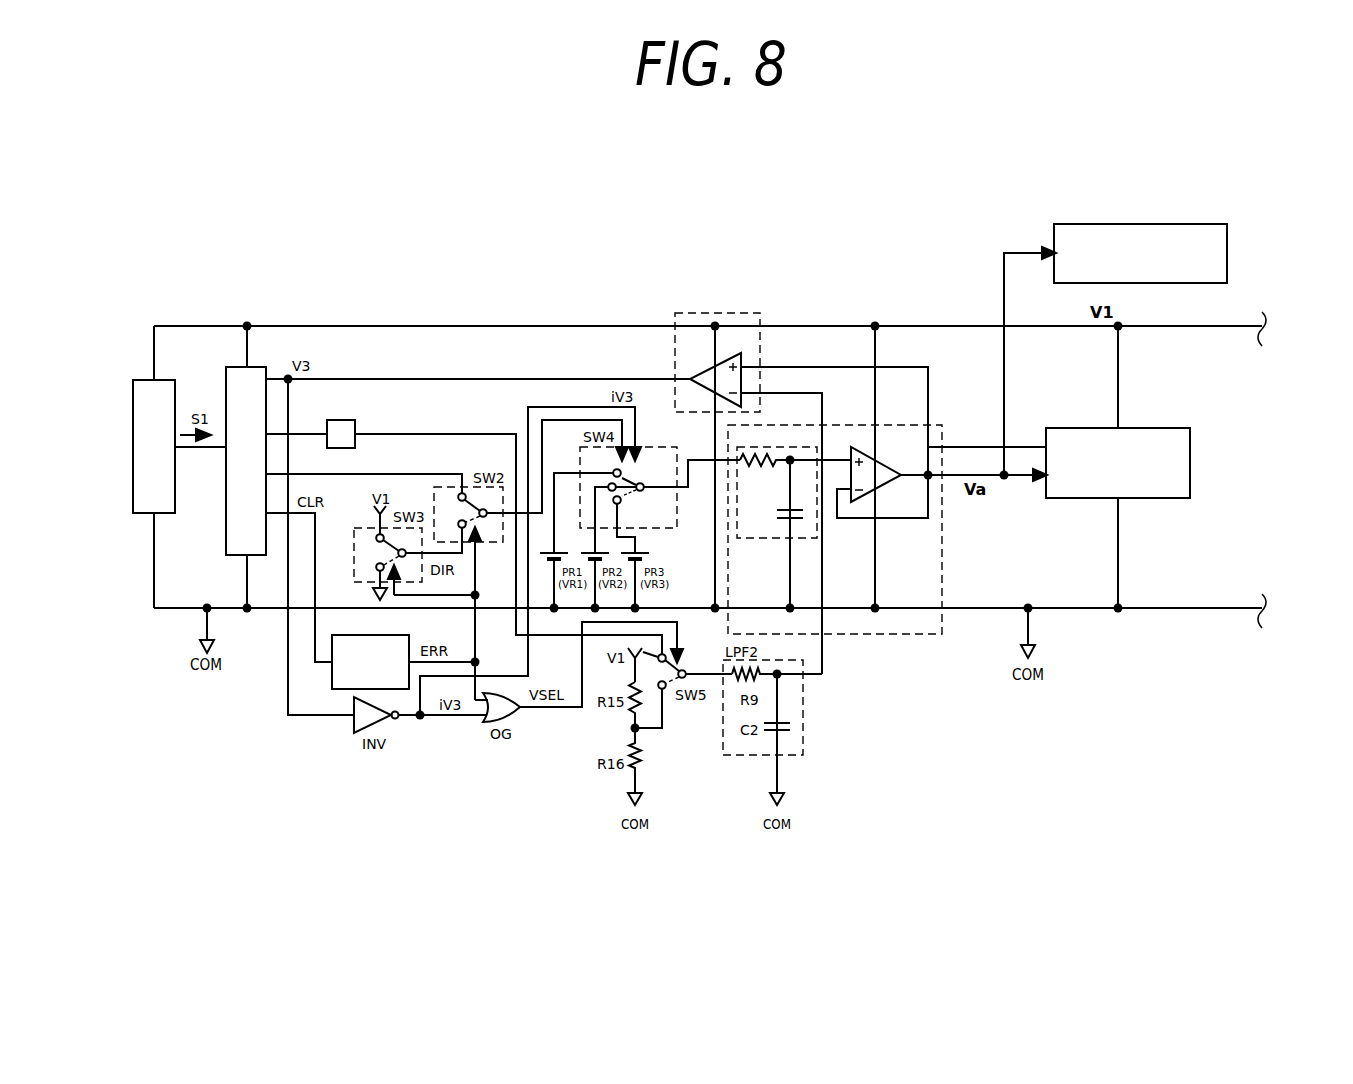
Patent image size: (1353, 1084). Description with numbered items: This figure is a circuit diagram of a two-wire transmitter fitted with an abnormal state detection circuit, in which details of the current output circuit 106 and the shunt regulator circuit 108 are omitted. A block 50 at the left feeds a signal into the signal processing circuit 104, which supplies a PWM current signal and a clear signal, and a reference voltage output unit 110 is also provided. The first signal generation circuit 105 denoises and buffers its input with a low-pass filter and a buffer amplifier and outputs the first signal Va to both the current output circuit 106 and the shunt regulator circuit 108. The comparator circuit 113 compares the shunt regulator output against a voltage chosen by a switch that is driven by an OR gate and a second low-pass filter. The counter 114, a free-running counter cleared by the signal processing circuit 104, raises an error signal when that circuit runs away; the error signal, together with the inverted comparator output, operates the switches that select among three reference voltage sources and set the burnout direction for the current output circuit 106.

The sensor 50 is at (143, 380).
The signal processing circuit 104 is at (249, 367).
The reference voltage output unit 110 is at (341, 413).
The comparator circuit 113 is at (699, 313).
The first signal generation circuit 105 is at (780, 426).
The counter 114 is at (352, 635).
The current output circuit 106 is at (1227, 253).
The shunt regulator circuit 108 is at (1190, 465).